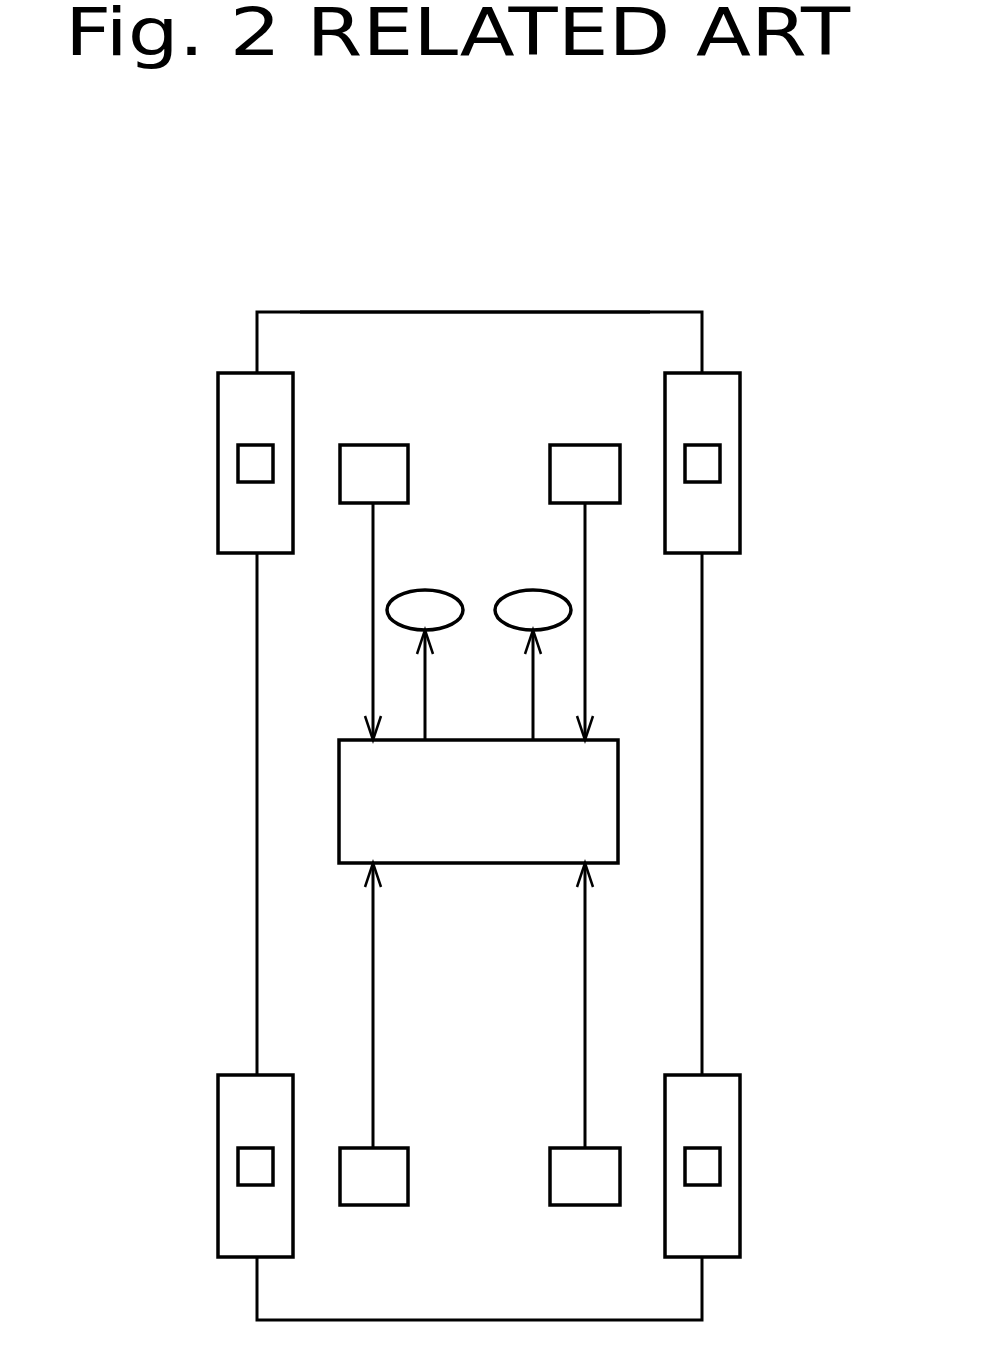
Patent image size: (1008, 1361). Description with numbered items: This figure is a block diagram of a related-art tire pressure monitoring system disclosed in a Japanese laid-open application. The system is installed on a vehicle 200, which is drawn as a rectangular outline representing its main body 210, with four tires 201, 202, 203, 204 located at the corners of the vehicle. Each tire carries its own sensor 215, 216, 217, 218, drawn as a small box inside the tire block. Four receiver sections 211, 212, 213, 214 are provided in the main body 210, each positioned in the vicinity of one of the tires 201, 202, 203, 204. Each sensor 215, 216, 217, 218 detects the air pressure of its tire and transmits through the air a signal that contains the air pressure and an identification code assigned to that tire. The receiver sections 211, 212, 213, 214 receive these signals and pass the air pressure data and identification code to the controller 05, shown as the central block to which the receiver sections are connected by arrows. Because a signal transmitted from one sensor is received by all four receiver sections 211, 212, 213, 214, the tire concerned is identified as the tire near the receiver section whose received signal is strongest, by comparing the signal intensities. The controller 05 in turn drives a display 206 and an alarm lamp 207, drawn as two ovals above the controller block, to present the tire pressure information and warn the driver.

The vehicle 200 is at (583, 266).
The main body 210 is at (425, 312).
The tire 201 is at (218, 481).
The tire 202 is at (741, 481).
The tire 203 is at (218, 1185).
The tire 204 is at (741, 1185).
The sensor 215 is at (255, 445).
The sensor 216 is at (703, 445).
The sensor 217 is at (255, 1148).
The sensor 218 is at (701, 1148).
The receiver section 211 is at (373, 445).
The receiver section 212 is at (585, 445).
The receiver section 213 is at (373, 1205).
The receiver section 214 is at (585, 1205).
The display 206 is at (425, 590).
The alarm lamp 207 is at (533, 590).
The controller 05 is at (619, 799).